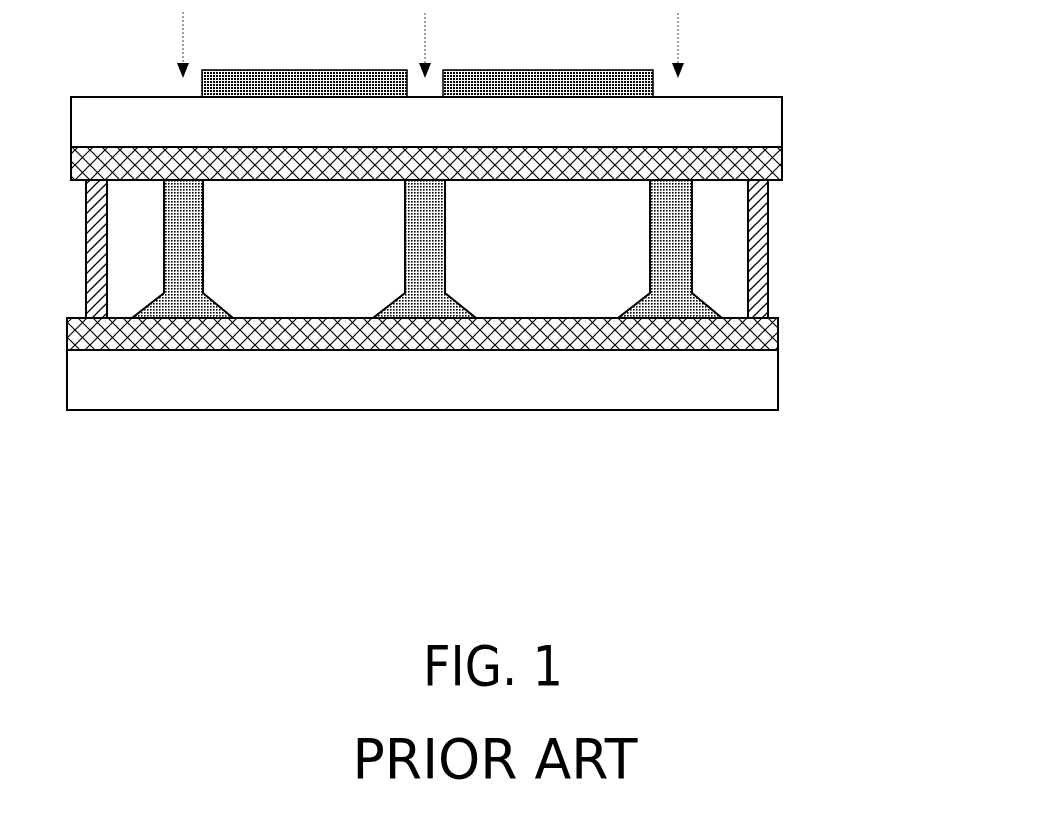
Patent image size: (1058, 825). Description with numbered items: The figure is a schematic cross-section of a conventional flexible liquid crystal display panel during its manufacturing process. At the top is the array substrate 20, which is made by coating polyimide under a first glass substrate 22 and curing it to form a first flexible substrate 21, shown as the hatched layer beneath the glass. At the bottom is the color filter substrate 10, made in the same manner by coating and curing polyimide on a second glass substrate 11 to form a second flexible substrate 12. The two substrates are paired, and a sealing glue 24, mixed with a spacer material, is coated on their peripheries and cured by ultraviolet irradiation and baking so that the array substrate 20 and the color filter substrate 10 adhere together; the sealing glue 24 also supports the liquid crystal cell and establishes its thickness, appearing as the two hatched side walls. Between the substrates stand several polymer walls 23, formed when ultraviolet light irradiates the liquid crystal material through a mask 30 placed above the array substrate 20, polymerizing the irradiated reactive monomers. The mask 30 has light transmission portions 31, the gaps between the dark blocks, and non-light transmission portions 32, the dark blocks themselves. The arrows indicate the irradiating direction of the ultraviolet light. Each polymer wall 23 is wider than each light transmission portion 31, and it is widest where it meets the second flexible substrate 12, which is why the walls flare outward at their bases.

The color filter substrate 10 is at (494, 343).
The second glass substrate 11 is at (778, 382).
The second flexible substrate 12 is at (778, 337).
The array substrate 20 is at (502, 119).
The first flexible substrate 21 is at (782, 159).
The first glass substrate 22 is at (782, 115).
The polymer wall 23 is at (670, 253).
The sealing glue 24 is at (768, 248).
The mask 30 is at (557, 70).
The light transmission portion 31 is at (420, 87).
The non-light transmission portion 32 is at (287, 72).